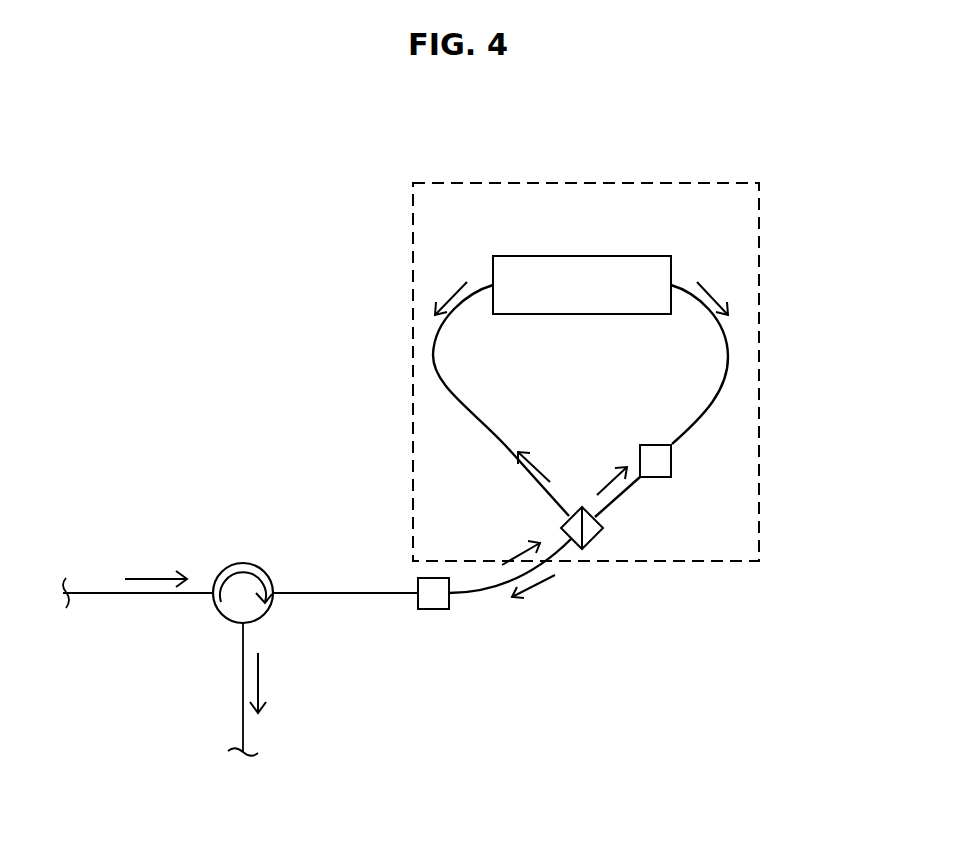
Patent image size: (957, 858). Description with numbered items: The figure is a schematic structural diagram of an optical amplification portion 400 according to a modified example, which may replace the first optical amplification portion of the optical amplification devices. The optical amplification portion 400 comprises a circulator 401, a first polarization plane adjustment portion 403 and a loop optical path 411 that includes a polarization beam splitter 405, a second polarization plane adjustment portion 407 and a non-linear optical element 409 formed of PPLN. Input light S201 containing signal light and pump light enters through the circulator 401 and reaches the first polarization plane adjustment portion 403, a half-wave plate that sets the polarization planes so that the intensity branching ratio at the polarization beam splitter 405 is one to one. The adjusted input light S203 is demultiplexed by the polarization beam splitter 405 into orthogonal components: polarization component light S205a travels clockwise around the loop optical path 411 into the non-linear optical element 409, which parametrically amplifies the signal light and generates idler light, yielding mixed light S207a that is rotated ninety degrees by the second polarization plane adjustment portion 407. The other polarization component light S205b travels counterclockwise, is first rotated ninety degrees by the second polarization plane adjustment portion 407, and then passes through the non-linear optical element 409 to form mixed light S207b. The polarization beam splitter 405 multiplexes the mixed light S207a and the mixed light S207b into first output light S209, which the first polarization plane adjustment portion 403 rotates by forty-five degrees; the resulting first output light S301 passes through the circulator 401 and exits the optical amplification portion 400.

The optical amplification portion 400 is at (758, 146).
The circulator 401 is at (243, 563).
The first polarization plane adjustment portion 403 is at (433, 610).
The polarization beam splitter 405 is at (599, 538).
The second polarization plane adjustment portion 407 is at (671, 461).
The non-linear optical element 409 is at (581, 256).
The loop optical path 411 is at (760, 353).
The input light S201 is at (157, 578).
The input light S203 is at (528, 552).
The polarization component light S205a is at (548, 468).
The polarization component light S205b is at (602, 480).
The mixed light S207a is at (707, 292).
The mixed light S207b is at (447, 292).
The first output light S209 is at (542, 588).
The first output light S301 is at (259, 680).